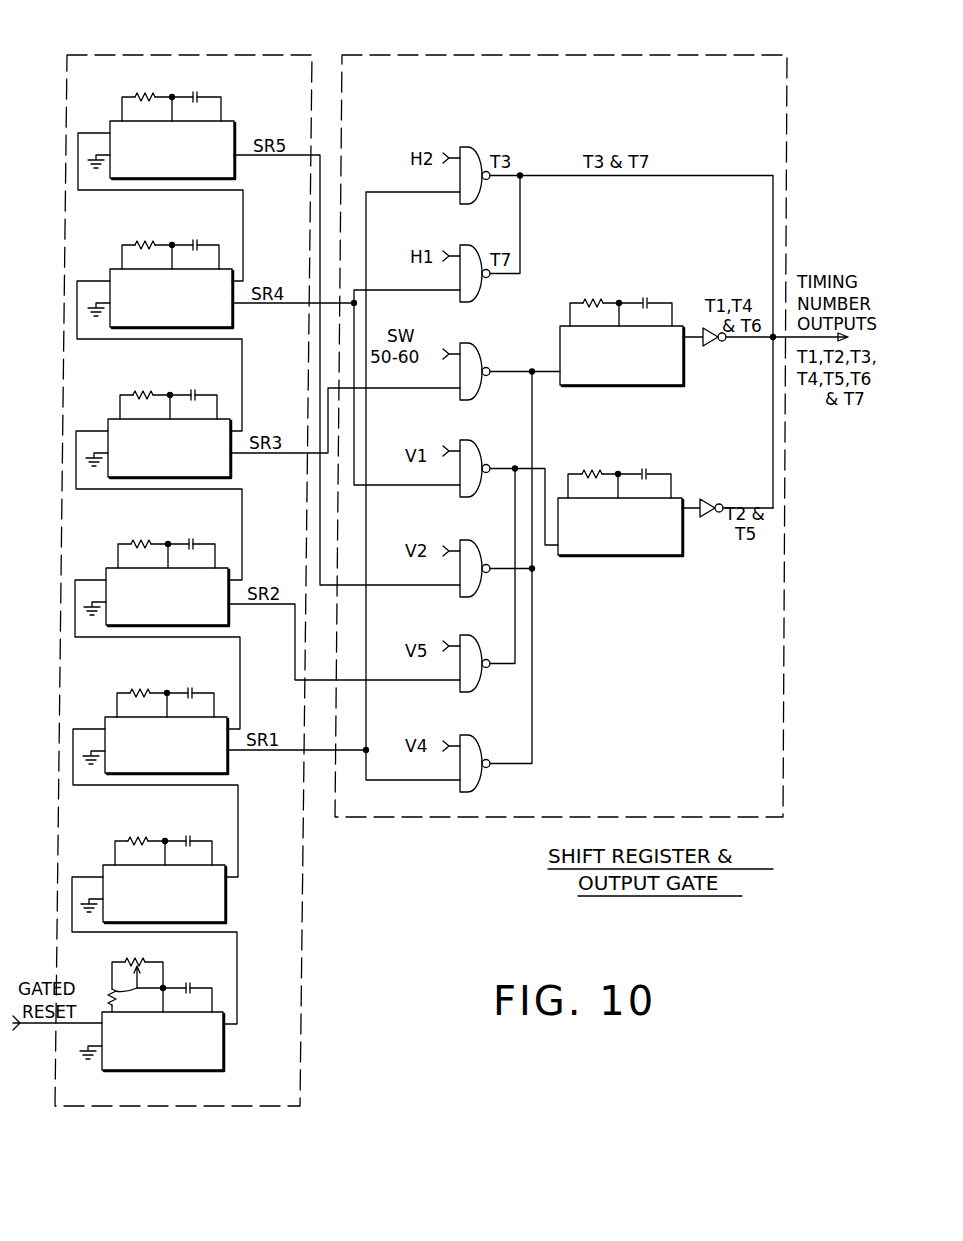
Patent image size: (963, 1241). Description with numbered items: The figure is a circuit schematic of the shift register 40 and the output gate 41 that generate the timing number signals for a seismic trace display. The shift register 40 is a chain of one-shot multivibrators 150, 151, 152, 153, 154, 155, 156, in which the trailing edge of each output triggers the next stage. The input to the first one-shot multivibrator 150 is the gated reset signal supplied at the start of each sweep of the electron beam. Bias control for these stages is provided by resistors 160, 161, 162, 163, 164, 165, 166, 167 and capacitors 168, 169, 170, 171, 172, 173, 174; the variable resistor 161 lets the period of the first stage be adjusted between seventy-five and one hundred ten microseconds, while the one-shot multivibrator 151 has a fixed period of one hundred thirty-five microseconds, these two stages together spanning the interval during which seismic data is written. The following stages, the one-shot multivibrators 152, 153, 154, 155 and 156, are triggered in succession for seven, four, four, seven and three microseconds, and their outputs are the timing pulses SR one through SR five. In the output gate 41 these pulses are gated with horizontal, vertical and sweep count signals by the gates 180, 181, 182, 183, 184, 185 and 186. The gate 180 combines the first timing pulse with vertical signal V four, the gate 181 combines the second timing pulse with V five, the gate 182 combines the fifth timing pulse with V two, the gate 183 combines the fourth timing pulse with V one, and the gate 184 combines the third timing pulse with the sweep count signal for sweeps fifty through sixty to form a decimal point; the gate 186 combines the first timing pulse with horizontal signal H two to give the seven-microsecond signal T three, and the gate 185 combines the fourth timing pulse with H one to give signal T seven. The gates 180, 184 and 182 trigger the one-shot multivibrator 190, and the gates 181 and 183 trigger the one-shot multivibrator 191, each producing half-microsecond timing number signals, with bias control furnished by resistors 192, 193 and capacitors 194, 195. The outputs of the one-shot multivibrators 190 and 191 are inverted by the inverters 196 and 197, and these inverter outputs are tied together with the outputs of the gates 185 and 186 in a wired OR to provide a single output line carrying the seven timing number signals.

The shift register 40 is at (300, 46).
The output gate 41 is at (651, 46).
The one-shot multivibrator 150 is at (106, 1010).
The one-shot multivibrator 151 is at (106, 865).
The one-shot multivibrator 152 is at (108, 717).
The one-shot multivibrator 153 is at (109, 568).
The one-shot multivibrator 154 is at (111, 419).
The one-shot multivibrator 155 is at (113, 269).
The one-shot multivibrator 156 is at (116, 121).
The resistor 160 is at (116, 989).
The variable resistor 161 is at (135, 961).
The resistor 162 is at (138, 837).
The resistor 163 is at (140, 689).
The resistor 164 is at (139, 540).
The resistor 165 is at (141, 391).
The resistor 166 is at (143, 242).
The resistor 167 is at (144, 94).
The capacitor 168 is at (190, 980).
The capacitor 169 is at (190, 837).
The capacitor 170 is at (191, 689).
The capacitor 171 is at (192, 540).
The capacitor 172 is at (196, 391).
The capacitor 173 is at (198, 241).
The capacitor 174 is at (204, 92).
The gate 180 is at (475, 738).
The gate 181 is at (473, 642).
The gate 182 is at (477, 548).
The gate 183 is at (478, 445).
The gate 184 is at (480, 355).
The gate 185 is at (480, 250).
The gate 186 is at (482, 148).
The one-shot multivibrator 190 is at (677, 326).
The one-shot multivibrator 191 is at (677, 498).
The resistor 192 is at (591, 468).
The resistor 193 is at (593, 297).
The capacitor 194 is at (646, 468).
The capacitor 195 is at (647, 297).
The inverter 196 is at (708, 346).
The inverter 197 is at (716, 500).